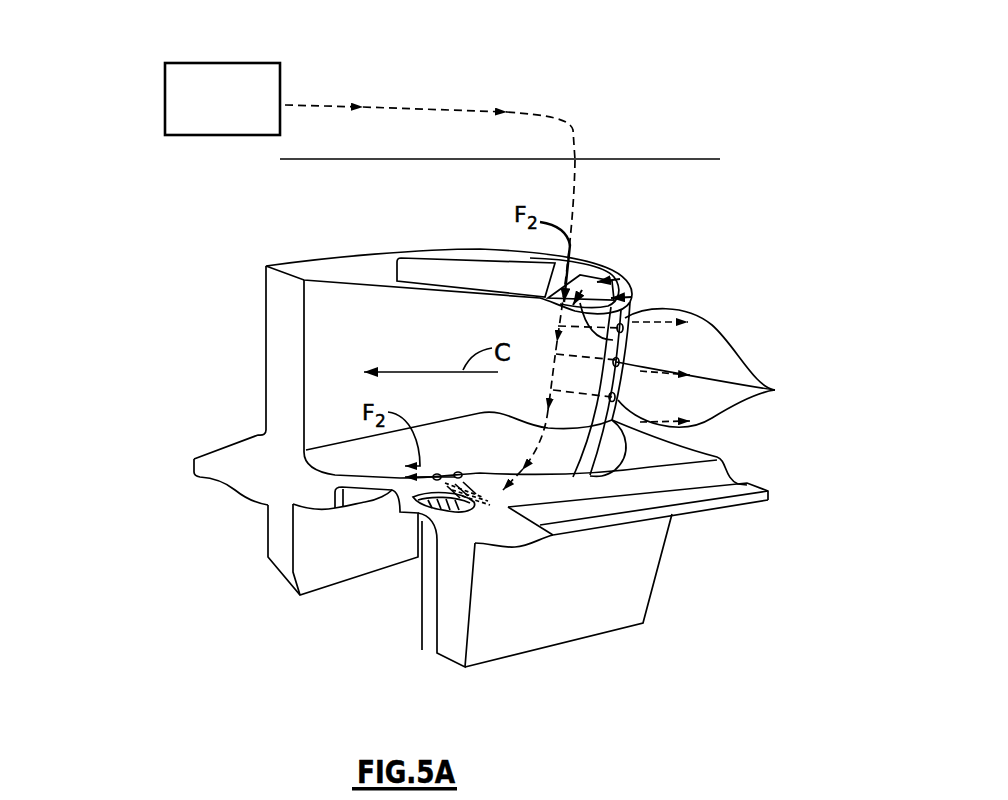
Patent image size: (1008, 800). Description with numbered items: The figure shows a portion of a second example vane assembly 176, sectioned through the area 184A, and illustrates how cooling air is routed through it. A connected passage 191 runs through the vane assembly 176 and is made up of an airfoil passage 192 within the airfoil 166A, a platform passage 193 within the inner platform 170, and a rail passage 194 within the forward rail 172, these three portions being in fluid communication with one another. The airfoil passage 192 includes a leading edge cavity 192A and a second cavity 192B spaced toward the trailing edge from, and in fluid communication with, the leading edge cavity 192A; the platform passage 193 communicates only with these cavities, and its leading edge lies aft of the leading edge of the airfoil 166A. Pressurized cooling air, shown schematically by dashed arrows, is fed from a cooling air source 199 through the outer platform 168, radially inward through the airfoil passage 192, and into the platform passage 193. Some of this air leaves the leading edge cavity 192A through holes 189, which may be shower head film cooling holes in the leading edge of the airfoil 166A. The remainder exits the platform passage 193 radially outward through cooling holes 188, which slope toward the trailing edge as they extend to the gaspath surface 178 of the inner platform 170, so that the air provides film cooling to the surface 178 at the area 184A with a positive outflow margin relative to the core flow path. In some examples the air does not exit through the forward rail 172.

The cooling air source 199 is at (208, 63).
The outer platform 168 is at (683, 158).
The vane assembly 176 is at (143, 355).
The connected passage 191 is at (618, 280).
The airfoil passage 192 is at (583, 282).
The leading edge cavity 192A is at (632, 290).
The second cavity 192B is at (618, 355).
The airfoil 166A is at (585, 379).
The holes 189 is at (776, 390).
The cooling holes 188 is at (445, 470).
The platform passage 193 is at (461, 510).
The rail passage 194 is at (433, 600).
The inner platform 170 is at (488, 523).
The forward rail 172 is at (460, 607).
The gaspath surface 178 is at (500, 492).
The area 184A is at (522, 490).